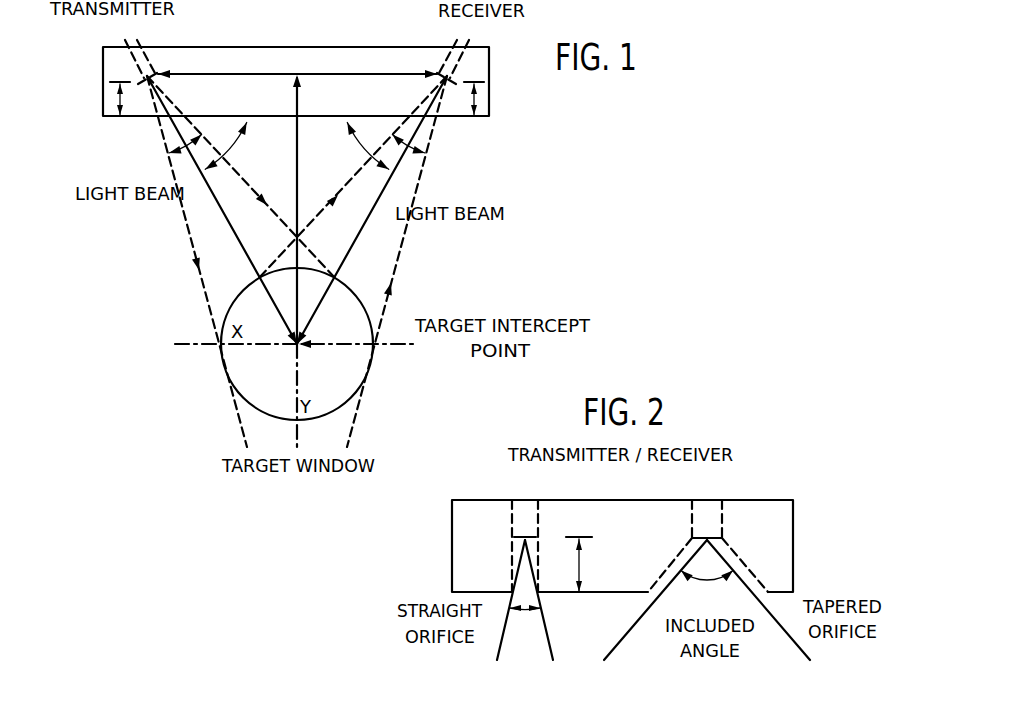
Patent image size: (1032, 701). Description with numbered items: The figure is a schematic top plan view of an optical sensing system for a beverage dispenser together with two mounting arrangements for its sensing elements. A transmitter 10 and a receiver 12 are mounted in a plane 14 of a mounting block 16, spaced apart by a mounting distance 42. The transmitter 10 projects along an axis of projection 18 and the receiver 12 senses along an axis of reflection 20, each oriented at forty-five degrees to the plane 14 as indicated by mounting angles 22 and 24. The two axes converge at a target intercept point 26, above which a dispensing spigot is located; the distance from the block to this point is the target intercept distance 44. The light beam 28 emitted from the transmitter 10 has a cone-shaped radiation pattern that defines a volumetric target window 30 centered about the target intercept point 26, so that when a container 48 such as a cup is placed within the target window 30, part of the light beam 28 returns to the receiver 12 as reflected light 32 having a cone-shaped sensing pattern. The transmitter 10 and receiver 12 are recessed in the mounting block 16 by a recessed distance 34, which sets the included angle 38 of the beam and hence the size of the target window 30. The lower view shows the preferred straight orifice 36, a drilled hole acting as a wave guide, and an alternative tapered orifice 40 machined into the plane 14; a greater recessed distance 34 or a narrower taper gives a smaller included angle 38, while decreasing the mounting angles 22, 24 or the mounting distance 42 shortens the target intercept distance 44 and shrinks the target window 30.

In FIG. 1, the transmitter 10 is at (133, 46).
In FIG. 2, the transmitter 10 is at (528, 515).
In FIG. 1, the receiver 12 is at (460, 50).
In FIG. 2, the receiver 12 is at (709, 507).
In FIG. 1, the plane 14 is at (488, 118).
In FIG. 2, the plane 14 is at (565, 594).
In FIG. 1, the mounting block 16 is at (366, 110).
In FIG. 2, the mounting block 16 is at (645, 536).
In FIG. 1, the axis of projection 18 is at (226, 220).
In FIG. 1, the axis of reflection 20 is at (368, 220).
In FIG. 1, the mounting angle 22 is at (241, 139).
In FIG. 1, the mounting angle 24 is at (357, 140).
In FIG. 1, the target intercept point 26 is at (302, 348).
In FIG. 1, the light beam 28 is at (233, 271).
In FIG. 2, the light beam 28 is at (552, 691).
In FIG. 1, the target window 30 is at (276, 388).
In FIG. 1, the reflected light 32 is at (341, 246).
In FIG. 2, the reflected light 32 is at (735, 691).
In FIG. 1, the recessed distance 34 is at (116, 92).
In FIG. 2, the recessed distance 34 is at (580, 568).
In FIG. 2, the straight orifice 36 is at (508, 556).
In FIG. 1, the included angle 38 is at (168, 149).
In FIG. 2, the included angle 38 is at (531, 612).
In FIG. 2, the tapered orifice 40 is at (730, 548).
In FIG. 1, the mounting distance 42 is at (250, 73).
In FIG. 1, the target intercept distance 44 is at (295, 188).
In FIG. 1, the container 48 is at (243, 403).